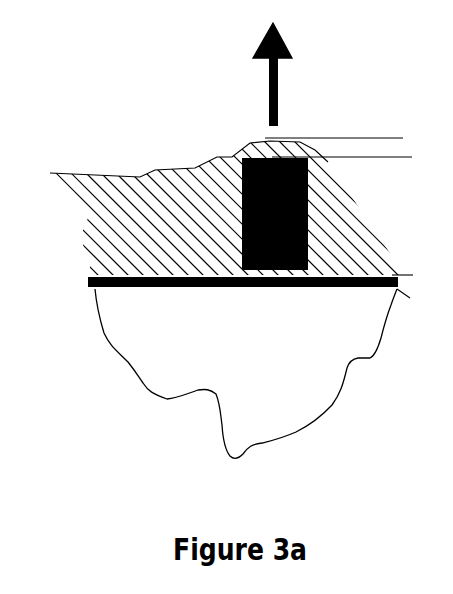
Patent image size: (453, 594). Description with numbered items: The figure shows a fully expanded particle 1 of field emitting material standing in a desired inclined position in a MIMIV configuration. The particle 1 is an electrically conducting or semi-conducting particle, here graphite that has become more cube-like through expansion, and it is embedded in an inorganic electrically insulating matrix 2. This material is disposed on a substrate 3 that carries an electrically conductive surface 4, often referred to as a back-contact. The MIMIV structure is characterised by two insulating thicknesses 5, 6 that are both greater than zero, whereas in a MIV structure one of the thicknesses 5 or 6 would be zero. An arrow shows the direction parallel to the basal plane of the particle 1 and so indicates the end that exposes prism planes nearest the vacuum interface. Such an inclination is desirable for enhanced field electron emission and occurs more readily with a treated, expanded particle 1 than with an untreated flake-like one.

The particle 1 is at (287, 198).
The inorganic electrically insulating matrix 2 is at (116, 241).
The substrate 3 is at (322, 355).
The electrically conductive surface 4 is at (88, 287).
The thickness 5 is at (351, 149).
The thickness 6 is at (414, 281).